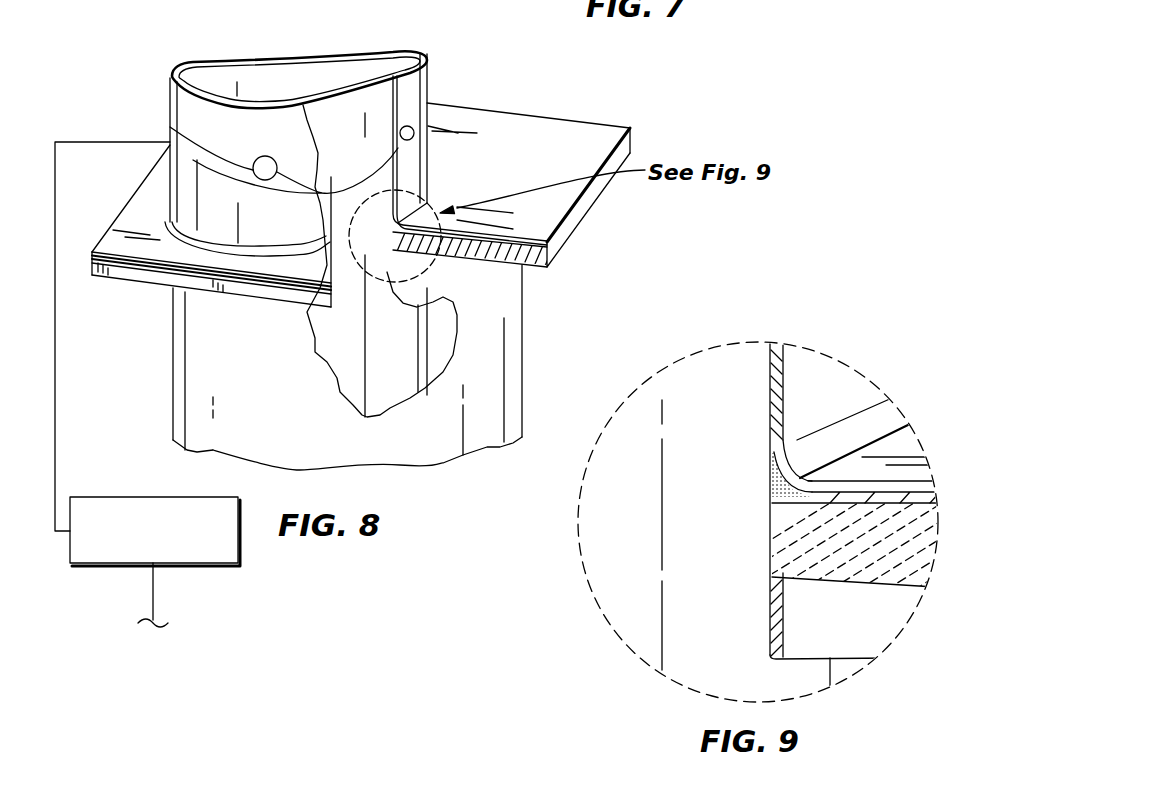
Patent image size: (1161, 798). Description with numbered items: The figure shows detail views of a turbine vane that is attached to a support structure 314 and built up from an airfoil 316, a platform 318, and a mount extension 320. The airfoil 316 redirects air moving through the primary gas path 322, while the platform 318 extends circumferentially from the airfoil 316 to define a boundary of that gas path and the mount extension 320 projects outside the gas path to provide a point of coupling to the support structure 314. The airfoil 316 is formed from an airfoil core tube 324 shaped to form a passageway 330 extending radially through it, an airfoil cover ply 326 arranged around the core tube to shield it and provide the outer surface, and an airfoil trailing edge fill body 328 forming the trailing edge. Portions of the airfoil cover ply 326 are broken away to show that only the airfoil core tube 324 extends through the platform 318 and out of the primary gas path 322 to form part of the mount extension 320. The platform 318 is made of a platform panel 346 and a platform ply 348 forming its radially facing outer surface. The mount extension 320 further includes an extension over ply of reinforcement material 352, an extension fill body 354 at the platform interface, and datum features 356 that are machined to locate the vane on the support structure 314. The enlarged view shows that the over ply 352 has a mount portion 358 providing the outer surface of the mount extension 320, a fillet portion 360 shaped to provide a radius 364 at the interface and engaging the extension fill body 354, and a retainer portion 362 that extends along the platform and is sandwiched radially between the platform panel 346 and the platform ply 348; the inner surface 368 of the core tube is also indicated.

In FIG. 8, the support structure 314 is at (108, 497).
In FIG. 8, the airfoil 316 is at (158, 354).
In FIG. 8, the platform 318 is at (86, 238).
In FIG. 8, the mount extension 320 is at (311, 208).
In FIG. 8, the primary gas path 322 is at (137, 322).
In FIG. 8, the airfoil core tube 324 is at (337, 115).
In FIG. 9, the airfoil core tube 324 is at (708, 397).
In FIG. 8, the airfoil cover ply 326 is at (443, 298).
In FIG. 9, the airfoil cover ply 326 is at (788, 613).
In FIG. 8, the airfoil trailing edge fill body 328 is at (437, 332).
In FIG. 9, the airfoil trailing edge fill body 328 is at (850, 672).
In FIG. 8, the passageway 330 is at (270, 82).
In FIG. 8, the platform panel 346 is at (530, 262).
In FIG. 9, the platform panel 346 is at (908, 582).
In FIG. 8, the platform ply 348 is at (548, 222).
In FIG. 9, the platform ply 348 is at (890, 567).
In FIG. 8, the extension over ply of reinforcement material 352 is at (388, 98).
In FIG. 9, the extension over ply of reinforcement material 352 is at (867, 365).
In FIG. 8, the extension fill body 354 is at (384, 264).
In FIG. 9, the extension fill body 354 is at (773, 487).
In FIG. 8, the datum features 356 is at (170, 142).
In FIG. 9, the mount portion 358 is at (780, 383).
In FIG. 9, the fillet portion 360 is at (850, 440).
In FIG. 9, the retainer portion 362 is at (875, 497).
In FIG. 9, the radius 364 is at (808, 462).
In FIG. 9, the inner surface 368 is at (773, 498).